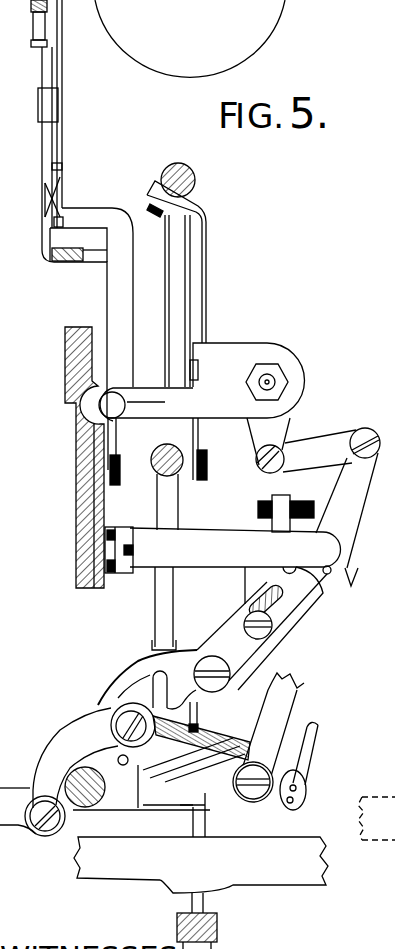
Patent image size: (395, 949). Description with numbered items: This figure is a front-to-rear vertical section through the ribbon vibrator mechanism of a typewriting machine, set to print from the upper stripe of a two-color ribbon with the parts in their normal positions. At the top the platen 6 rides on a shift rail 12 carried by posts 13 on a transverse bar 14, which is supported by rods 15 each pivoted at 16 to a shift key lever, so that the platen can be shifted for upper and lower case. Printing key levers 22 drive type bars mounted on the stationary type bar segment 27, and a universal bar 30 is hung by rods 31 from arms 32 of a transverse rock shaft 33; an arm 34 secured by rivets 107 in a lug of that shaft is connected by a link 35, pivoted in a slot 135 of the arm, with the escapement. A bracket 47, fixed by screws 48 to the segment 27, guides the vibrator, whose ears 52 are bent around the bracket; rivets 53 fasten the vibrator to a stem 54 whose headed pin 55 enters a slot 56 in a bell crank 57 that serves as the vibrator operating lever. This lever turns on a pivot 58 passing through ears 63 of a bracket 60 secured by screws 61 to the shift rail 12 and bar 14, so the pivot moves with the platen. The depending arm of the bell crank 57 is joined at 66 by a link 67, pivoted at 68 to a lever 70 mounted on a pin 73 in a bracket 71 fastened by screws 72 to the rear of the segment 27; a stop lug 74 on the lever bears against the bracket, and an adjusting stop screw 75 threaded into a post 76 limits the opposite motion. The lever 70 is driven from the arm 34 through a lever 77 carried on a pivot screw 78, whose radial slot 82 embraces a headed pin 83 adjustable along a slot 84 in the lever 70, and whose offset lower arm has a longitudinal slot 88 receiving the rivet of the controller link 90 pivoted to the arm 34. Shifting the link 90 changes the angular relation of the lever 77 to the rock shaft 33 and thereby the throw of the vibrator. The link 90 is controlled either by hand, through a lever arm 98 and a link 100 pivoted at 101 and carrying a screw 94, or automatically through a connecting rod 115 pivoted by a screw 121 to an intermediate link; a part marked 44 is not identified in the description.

The platen 6 is at (159, 63).
The shift rail 12 is at (193, 185).
The posts 13 is at (170, 283).
The transverse bar 14 is at (165, 477).
The rods 15 is at (158, 616).
The pivot 16 is at (195, 717).
The key levers 22 is at (107, 878).
The type bar segment 27 is at (79, 590).
The universal bar 30 is at (226, 918).
The rods 31 is at (202, 825).
The arms 32 is at (143, 802).
The rock shaft 33 is at (78, 802).
The arm 34 is at (111, 692).
The link 35 is at (309, 745).
The knob 44 is at (36, 47).
The bracket 47 is at (48, 261).
The screws 48 is at (120, 486).
The ears 52 is at (50, 112).
The rivets 53 is at (50, 183).
The stem 54 is at (84, 213).
The headed pin 55 is at (130, 387).
The slot 56 is at (126, 405).
The bell crank 57 is at (138, 420).
The pivot 58 is at (273, 378).
The bracket 60 is at (203, 248).
The screws 61 is at (156, 214).
The ears 63 is at (215, 349).
The pivot 66 is at (261, 459).
The link 67 is at (308, 446).
The pivot 68 is at (365, 432).
The lever 70 is at (362, 495).
The bracket 71 is at (215, 530).
The screws 72 is at (130, 567).
The pin 73 is at (331, 568).
The stop lug 74 is at (248, 575).
The adjusting screw 75 is at (303, 504).
The post 76 is at (280, 496).
The lever 77 is at (228, 638).
The pivot screw 78 is at (232, 659).
The radial slot 82 is at (285, 614).
The headed pin 83 is at (245, 617).
The slot 84 is at (290, 588).
The longitudinal slot 88 is at (163, 676).
The controller link 90 is at (222, 727).
The pivot screw 94 is at (118, 720).
The lever arm 98 is at (3, 820).
The link 100 is at (37, 767).
The pivot 101 is at (45, 832).
The rivets 107 is at (118, 760).
The connecting rod 115 is at (287, 675).
The pivot screw 121 is at (247, 804).
The slot 135 is at (294, 810).